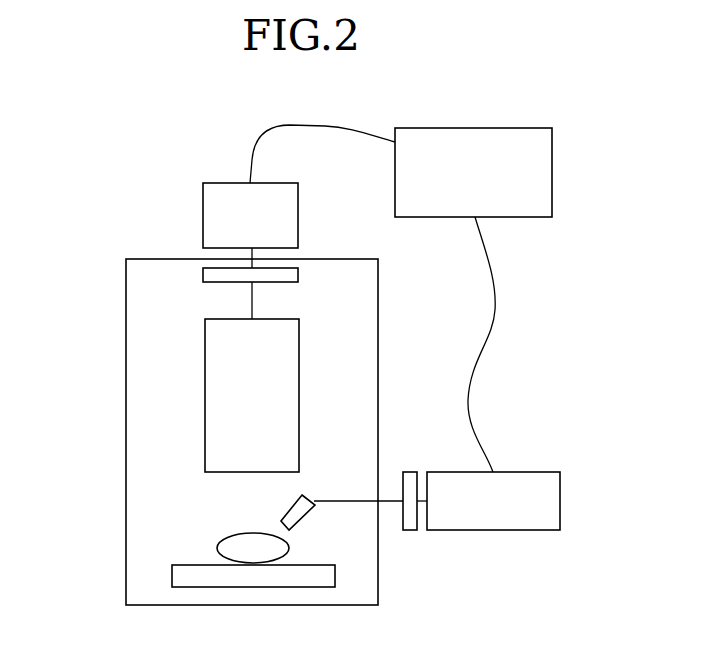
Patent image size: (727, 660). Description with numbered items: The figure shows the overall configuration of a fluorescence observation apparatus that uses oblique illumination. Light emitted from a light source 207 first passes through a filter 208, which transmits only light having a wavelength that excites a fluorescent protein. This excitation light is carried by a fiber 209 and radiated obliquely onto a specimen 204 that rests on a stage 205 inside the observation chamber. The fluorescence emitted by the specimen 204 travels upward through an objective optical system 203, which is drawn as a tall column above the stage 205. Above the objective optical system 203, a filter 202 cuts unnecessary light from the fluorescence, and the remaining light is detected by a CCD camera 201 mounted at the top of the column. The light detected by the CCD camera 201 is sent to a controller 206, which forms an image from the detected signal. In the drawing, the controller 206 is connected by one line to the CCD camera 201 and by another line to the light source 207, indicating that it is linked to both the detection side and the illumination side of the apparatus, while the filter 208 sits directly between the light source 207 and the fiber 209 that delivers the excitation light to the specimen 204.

The CCD camera 201 is at (225, 183).
The filter 202 is at (203, 273).
The objective optical system 203 is at (205, 388).
The specimen 204 is at (222, 540).
The stage 205 is at (172, 576).
The controller 206 is at (552, 170).
The light source 207 is at (560, 497).
The filter 208 is at (410, 530).
The fiber 209 is at (308, 513).